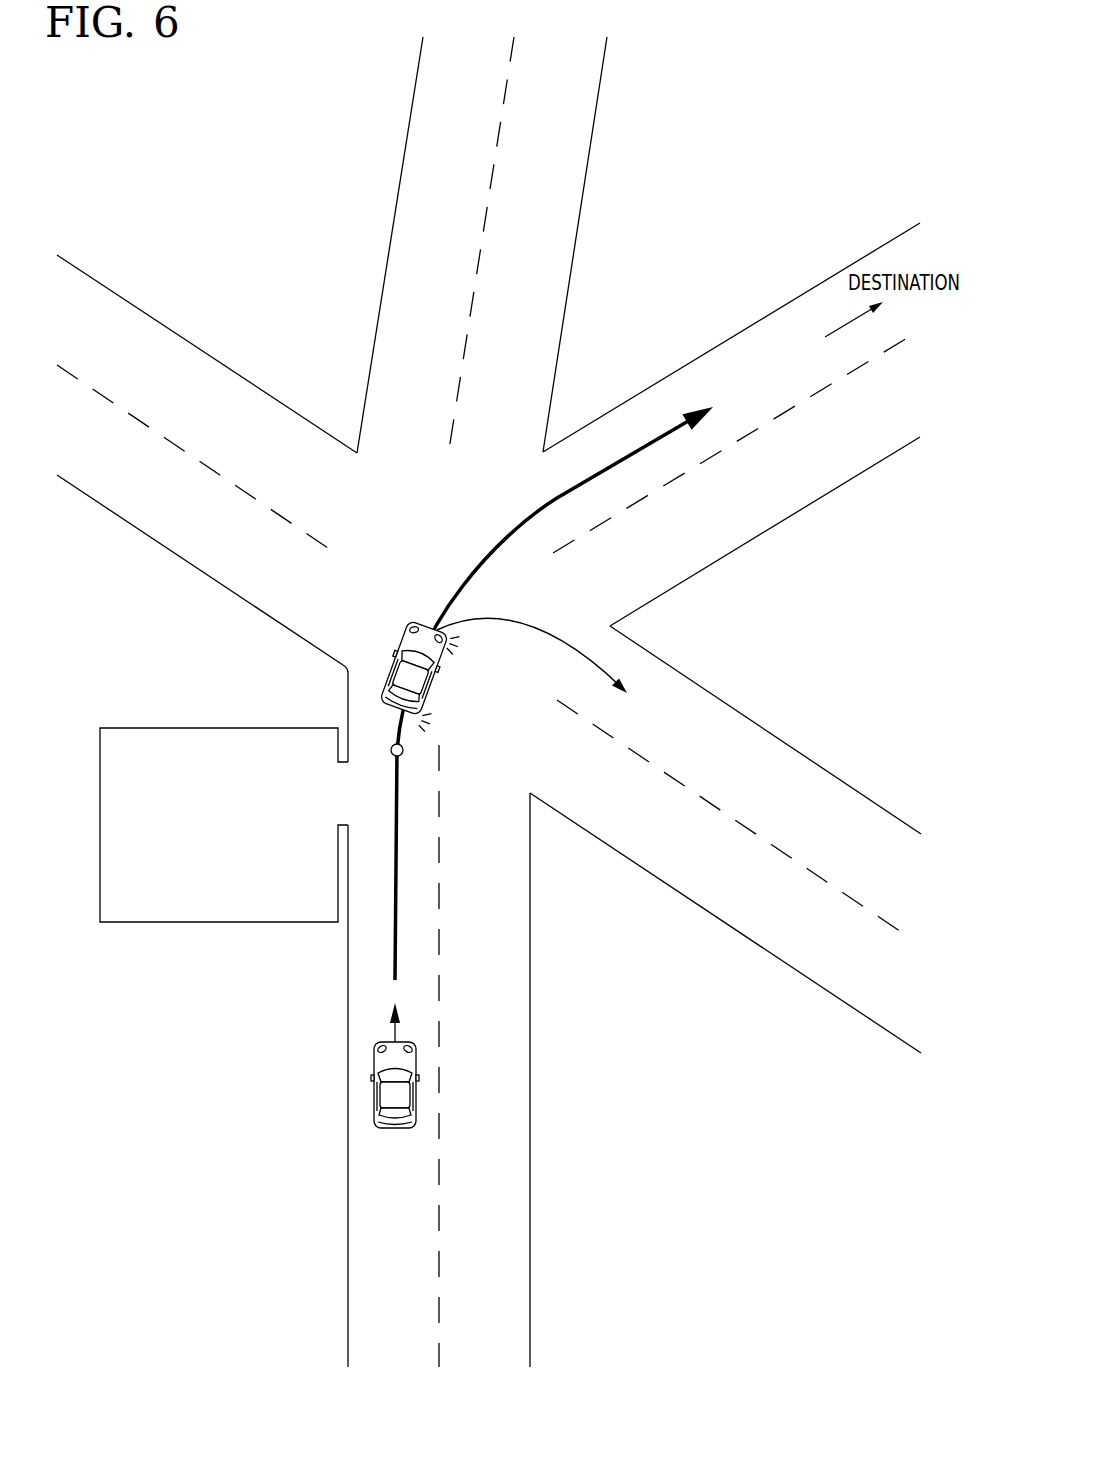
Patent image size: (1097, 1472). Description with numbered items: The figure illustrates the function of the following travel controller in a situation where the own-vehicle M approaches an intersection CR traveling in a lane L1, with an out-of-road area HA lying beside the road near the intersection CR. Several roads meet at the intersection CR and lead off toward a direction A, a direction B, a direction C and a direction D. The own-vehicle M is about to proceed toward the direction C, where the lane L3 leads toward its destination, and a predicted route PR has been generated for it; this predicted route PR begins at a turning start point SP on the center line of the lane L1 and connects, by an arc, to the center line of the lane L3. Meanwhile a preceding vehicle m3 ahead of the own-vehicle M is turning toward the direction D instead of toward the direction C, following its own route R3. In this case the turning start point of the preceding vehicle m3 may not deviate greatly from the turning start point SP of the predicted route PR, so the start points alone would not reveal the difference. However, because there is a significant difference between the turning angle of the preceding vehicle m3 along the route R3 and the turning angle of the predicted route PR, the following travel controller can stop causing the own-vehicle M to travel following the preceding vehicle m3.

The own-vehicle M is at (377, 1087).
The preceding vehicle m3 is at (402, 642).
The turning start point SP is at (405, 750).
The predicted route PR is at (470, 571).
The predicted route of other vehicle m3 R3 is at (538, 628).
The lane L1 is at (412, 1214).
The lane L3 is at (763, 397).
The intersection CR is at (454, 533).
The out-of-road area HA is at (236, 839).
The direction A is at (207, 508).
The road B is at (482, 246).
The direction C is at (731, 337).
The direction D is at (725, 839).